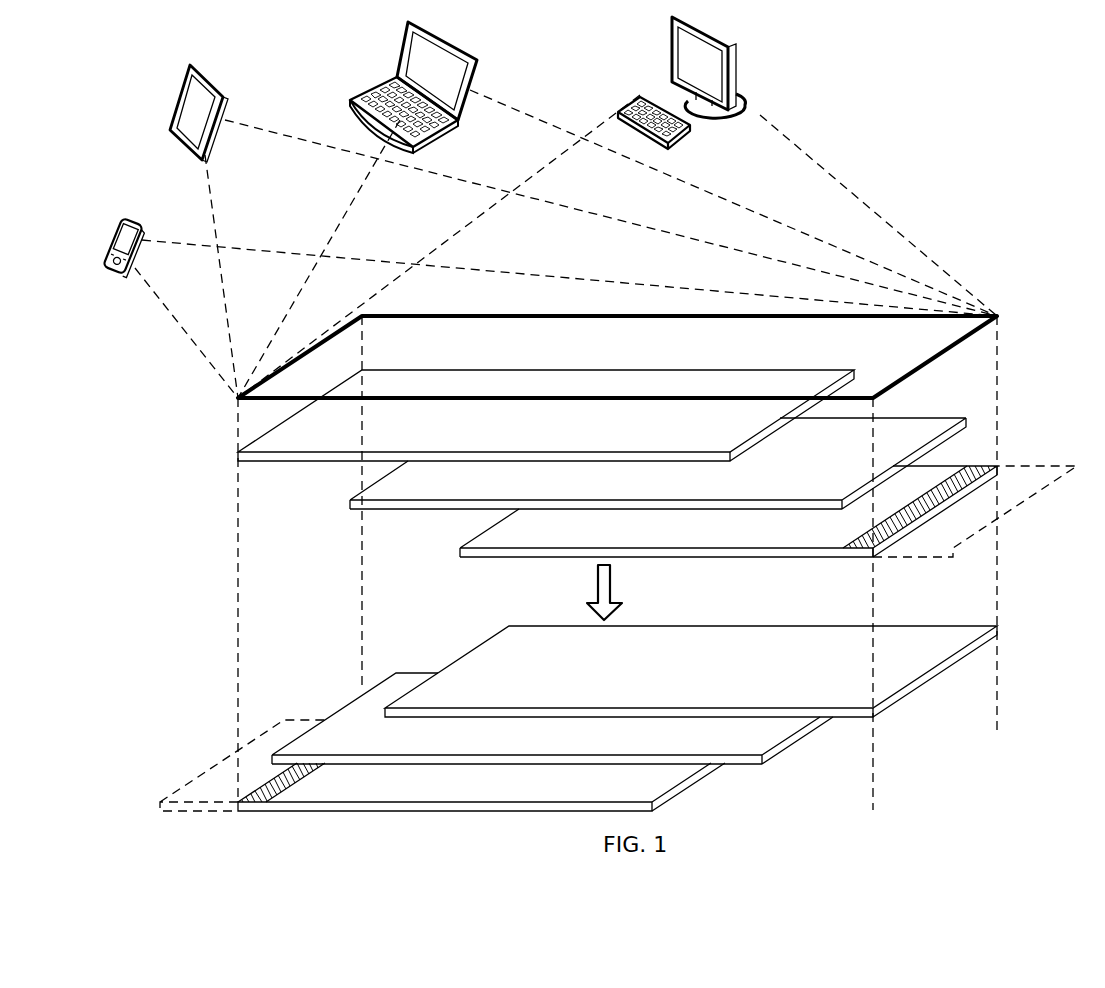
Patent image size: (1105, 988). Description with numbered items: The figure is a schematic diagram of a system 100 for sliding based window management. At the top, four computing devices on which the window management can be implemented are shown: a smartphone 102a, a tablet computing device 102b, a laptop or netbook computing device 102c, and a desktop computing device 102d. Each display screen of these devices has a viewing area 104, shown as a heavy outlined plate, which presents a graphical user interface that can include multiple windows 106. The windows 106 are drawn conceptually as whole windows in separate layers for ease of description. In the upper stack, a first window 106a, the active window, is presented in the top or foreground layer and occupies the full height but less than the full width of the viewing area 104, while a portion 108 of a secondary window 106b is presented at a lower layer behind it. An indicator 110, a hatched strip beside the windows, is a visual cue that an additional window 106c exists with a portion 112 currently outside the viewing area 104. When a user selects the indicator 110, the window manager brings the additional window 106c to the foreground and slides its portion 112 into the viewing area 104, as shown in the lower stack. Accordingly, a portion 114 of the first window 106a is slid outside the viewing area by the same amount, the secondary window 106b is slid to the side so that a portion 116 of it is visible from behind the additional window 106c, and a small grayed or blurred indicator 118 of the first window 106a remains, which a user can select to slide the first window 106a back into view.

The system 100 is at (856, 104).
The smartphone 102a is at (114, 218).
The tablet computing device 102b is at (184, 66).
The laptop or netbook computing device 102c is at (396, 50).
The desktop computing device 102d is at (736, 56).
The viewing area 104 is at (923, 368).
The windows 106 is at (146, 428).
The first window 106a is at (238, 455).
The secondary window 106b is at (350, 503).
The additional window 106c is at (460, 551).
The portion of secondary window 108 is at (835, 488).
The indicator 110 is at (851, 557).
The portion of additional window 112 is at (958, 542).
The portion of first window 114 is at (236, 797).
The portion of secondary window 116 is at (349, 752).
The indicator 118 is at (256, 831).